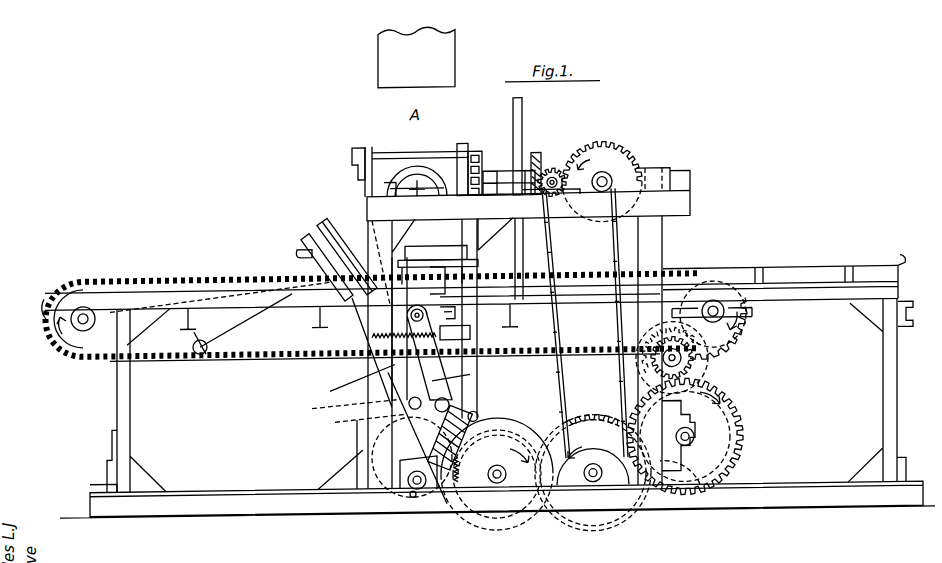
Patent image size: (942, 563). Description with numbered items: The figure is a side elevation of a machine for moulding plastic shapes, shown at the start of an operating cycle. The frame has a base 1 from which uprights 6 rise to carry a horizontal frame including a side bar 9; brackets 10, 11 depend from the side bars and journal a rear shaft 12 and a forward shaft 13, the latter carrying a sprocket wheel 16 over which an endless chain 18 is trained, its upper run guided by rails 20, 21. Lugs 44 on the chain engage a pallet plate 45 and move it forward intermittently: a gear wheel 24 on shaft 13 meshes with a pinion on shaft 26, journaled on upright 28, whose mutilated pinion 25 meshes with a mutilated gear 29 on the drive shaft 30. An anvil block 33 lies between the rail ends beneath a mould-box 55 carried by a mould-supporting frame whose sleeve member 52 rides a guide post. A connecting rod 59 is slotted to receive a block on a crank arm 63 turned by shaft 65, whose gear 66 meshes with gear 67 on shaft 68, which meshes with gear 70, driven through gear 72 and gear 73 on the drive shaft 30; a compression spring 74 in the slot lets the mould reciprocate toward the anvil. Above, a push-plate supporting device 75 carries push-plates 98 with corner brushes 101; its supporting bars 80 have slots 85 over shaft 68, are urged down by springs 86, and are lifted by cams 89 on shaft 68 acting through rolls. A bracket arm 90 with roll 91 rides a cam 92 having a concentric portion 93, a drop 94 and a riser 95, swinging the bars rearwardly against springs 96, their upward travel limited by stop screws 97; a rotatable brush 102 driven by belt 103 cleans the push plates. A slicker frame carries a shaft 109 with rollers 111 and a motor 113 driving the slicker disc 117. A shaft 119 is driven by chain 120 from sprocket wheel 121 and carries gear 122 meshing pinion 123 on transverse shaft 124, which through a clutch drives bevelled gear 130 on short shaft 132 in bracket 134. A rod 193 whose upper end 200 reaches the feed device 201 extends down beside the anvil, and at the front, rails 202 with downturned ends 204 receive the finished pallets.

The base 1 is at (260, 492).
The upright 6 is at (131, 410).
The side bar 9 is at (175, 293).
The bracket 10 is at (42, 312).
The bracket 11 is at (752, 322).
The horizontal shaft 12 is at (83, 318).
The horizontal shaft 13 is at (87, 346).
The sprocket wheel 16 is at (746, 345).
The endless chain 18 is at (198, 358).
The rail 20 is at (210, 293).
The rail 21 is at (608, 305).
The gear wheel 24 is at (694, 361).
The mutilated pinion 25 is at (682, 369).
The shaft 26 is at (660, 369).
The upright 28 is at (655, 250).
The mutilated gear 29 is at (737, 423).
The drive shaft 30 is at (694, 447).
The anvil block 33 is at (440, 280).
The lugs or teeth 44 is at (160, 280).
The pallet plate 45 is at (464, 270).
The sleeve member 52 is at (422, 329).
The mould-box 55 is at (466, 262).
The connecting rod 59 is at (349, 382).
The crank arm 63 is at (472, 384).
The shaft 65 is at (345, 409).
The gear 66 is at (358, 422).
The gear 67 is at (372, 508).
The shaft 68 is at (407, 496).
The gear 70 is at (470, 525).
The gear 72 is at (630, 523).
The gear 73 is at (717, 470).
The coiled compression spring 74 is at (432, 440).
The push-plate supporting device 75 is at (320, 225).
The supporting bar 80 is at (370, 350).
The elongate slot 85 is at (347, 465).
The spring 86 is at (413, 504).
The cam 89 is at (447, 510).
The bracket arm 90 is at (482, 400).
The anti-friction roll 91 is at (478, 420).
The cam 92 is at (525, 433).
The concentric portion 93 is at (503, 437).
The drop 94 is at (470, 474).
The riser 95 is at (506, 527).
The spring 96 is at (472, 346).
The stop screw 97 is at (458, 320).
The push-plate 98 is at (317, 251).
The brush 101 is at (303, 254).
The rotatable brush 102 is at (528, 205).
The belt 103 is at (255, 329).
The shaft 109 is at (456, 150).
The roller 111 is at (362, 155).
The motor 113 is at (417, 173).
The slicker disc 117 is at (432, 252).
The shaft 119 is at (607, 178).
The chain 120 is at (578, 254).
The sprocket wheel 121 is at (592, 440).
The gear 122 is at (607, 151).
The pinion 123 is at (552, 184).
The shaft 124 is at (552, 206).
The bevelled gear 130 is at (523, 137).
The short shaft 132 is at (441, 192).
The bracket 134 is at (500, 96).
The rod 193 is at (580, 268).
The upper end of rod 200 is at (522, 114).
The material supplying device 201 is at (416, 57).
The rail 202 is at (785, 278).
The downwardly directed rear end 204 is at (715, 280).